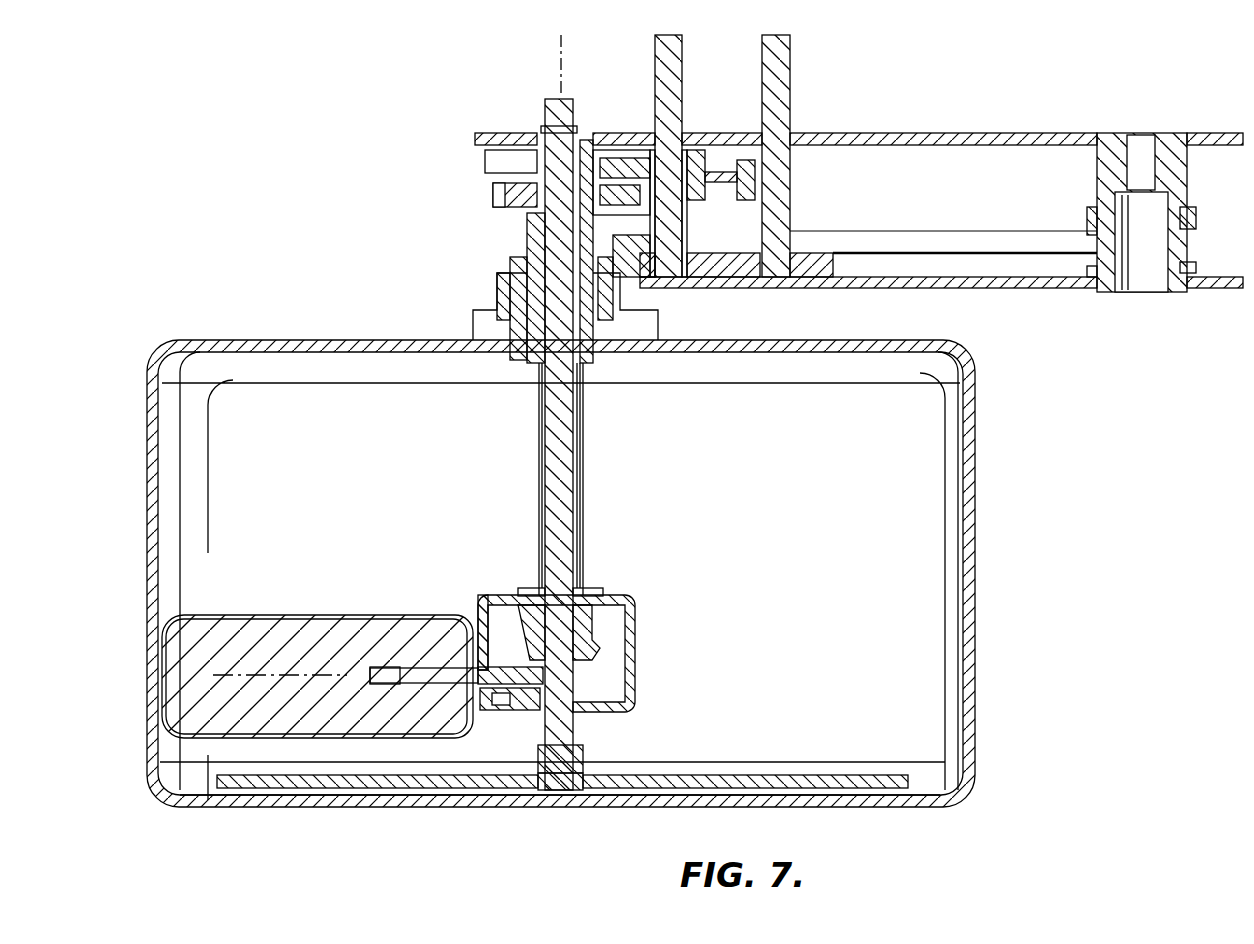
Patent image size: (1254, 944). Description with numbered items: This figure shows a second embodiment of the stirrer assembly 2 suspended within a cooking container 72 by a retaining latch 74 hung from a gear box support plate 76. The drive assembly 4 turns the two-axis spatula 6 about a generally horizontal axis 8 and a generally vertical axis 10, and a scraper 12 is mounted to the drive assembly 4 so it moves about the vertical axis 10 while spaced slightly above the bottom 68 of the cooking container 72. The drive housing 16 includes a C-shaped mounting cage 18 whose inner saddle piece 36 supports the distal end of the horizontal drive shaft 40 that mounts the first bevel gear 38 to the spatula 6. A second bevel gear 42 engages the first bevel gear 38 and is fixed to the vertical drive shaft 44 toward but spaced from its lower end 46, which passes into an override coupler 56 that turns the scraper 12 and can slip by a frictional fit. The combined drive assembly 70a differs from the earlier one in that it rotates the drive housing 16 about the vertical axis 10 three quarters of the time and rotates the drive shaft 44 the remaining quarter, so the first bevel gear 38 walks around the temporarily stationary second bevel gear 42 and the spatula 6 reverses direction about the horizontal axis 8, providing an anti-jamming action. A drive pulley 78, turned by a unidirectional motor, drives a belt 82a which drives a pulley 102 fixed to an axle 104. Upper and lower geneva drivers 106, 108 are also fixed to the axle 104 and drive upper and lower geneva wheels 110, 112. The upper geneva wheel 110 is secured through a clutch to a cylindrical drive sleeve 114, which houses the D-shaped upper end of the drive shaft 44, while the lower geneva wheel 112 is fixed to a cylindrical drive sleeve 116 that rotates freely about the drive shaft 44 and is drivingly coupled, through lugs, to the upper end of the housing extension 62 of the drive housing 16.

The stirrer assembly 2 is at (712, 452).
The drive assembly 4 is at (603, 427).
The spatula 6 is at (298, 606).
The horizontal axis 8 is at (262, 675).
The vertical axis 10 is at (570, 50).
The scraper 12 is at (760, 775).
The drive housing 16 is at (645, 591).
The mounting cage 18 is at (500, 620).
The inner saddle piece 36 is at (520, 710).
The first bevel gear 38 is at (515, 684).
The drive shaft 40 is at (418, 668).
The second bevel gear 42 is at (595, 645).
The vertical drive shaft 44 is at (565, 492).
The lower end 46 is at (583, 745).
The override coupler 56 is at (575, 772).
The housing extension 62 is at (584, 452).
The bottom 68 is at (760, 800).
The combined drive assembly 70a is at (388, 190).
The cooking container 72 is at (978, 550).
The retaining latch 74 is at (543, 128).
The gear box support plate 76 is at (978, 133).
The drive pulley 78 is at (1175, 187).
The belt 82a is at (930, 232).
The pulley 102 is at (700, 277).
The axle 104 is at (673, 100).
The upper geneva driver 106 is at (745, 130).
The lower geneva driver 108 is at (762, 211).
The upper geneva wheel 110 is at (485, 161).
The lower geneva wheel 112 is at (493, 193).
The cylindrical drive sleeve 114 is at (585, 140).
The cylindrical drive sleeve 116 is at (527, 236).